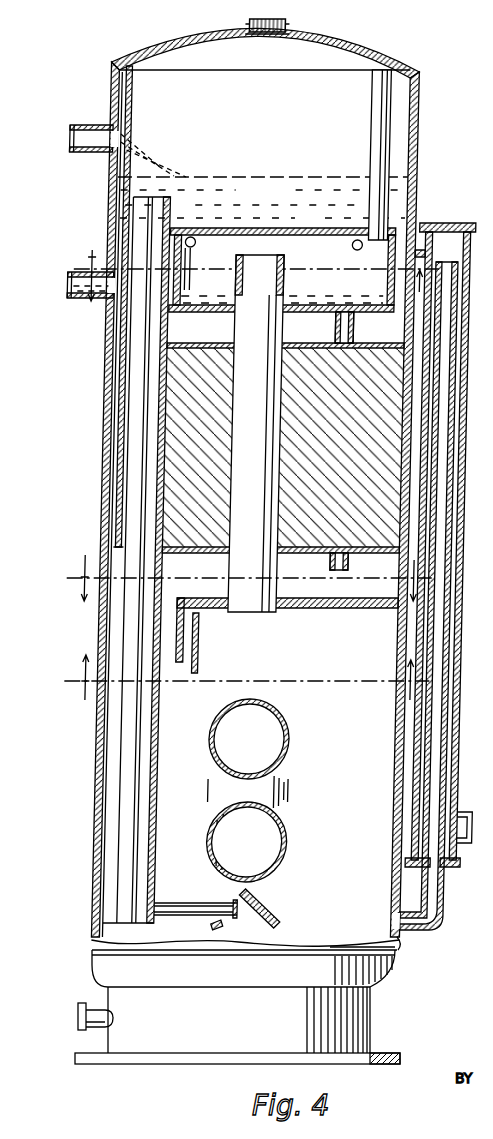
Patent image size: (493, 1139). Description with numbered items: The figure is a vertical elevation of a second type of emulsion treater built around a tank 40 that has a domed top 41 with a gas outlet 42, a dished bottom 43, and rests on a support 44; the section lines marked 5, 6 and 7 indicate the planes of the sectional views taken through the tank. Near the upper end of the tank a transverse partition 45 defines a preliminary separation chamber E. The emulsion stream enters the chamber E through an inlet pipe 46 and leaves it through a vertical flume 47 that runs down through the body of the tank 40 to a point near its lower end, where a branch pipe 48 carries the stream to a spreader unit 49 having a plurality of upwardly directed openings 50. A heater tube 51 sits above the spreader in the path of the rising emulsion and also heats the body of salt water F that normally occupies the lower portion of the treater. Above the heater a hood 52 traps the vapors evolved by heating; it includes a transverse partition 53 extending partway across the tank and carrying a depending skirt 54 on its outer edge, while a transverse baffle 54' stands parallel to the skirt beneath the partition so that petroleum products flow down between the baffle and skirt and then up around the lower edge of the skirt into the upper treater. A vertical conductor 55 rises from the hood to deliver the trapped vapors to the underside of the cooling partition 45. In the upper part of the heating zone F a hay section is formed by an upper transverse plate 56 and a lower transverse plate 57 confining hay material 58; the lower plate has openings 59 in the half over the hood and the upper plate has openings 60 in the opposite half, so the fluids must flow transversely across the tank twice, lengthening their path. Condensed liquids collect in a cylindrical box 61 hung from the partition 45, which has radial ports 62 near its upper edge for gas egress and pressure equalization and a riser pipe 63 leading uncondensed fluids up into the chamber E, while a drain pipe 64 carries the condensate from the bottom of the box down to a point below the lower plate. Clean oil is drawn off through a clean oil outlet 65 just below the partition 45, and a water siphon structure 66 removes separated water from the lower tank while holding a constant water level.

The tank 40 is at (123, 447).
The domed top 41 is at (393, 62).
The gas outlet 42 is at (264, 36).
The dished bottom 43 is at (385, 983).
The support 44 is at (365, 1010).
The transverse partition 45 is at (307, 229).
The inlet pipe 46 is at (103, 122).
The vertical flume 47 is at (136, 410).
The branch pipe 48 is at (183, 903).
The spreader unit 49 is at (291, 918).
The upwardly directed openings 50 is at (278, 893).
The heater tube 51 is at (295, 793).
The hood 52 is at (352, 608).
The transverse partition 53 is at (329, 608).
The skirt 54 is at (197, 630).
The transverse baffle 54' is at (213, 646).
The vertical conductor 55 is at (291, 556).
The upper transverse plate 56 is at (393, 348).
The lower transverse plate 57 is at (220, 553).
The hay material 58 is at (456, 353).
The openings 59 is at (406, 551).
The openings 60 is at (138, 362).
The cylindrical box 61 is at (189, 266).
The radial ports 62 is at (358, 247).
The riser pipe 63 is at (375, 117).
The drain pipe 64 is at (354, 412).
The clean oil outlet 65 is at (94, 271).
The water siphon structure 66 is at (454, 608).
The flange 6 is at (486, 243).
The section line 5 is at (256, 256).
The section line 7 is at (246, 689).
The preliminary separation chamber E is at (415, 115).
The body of salt water F is at (397, 748).